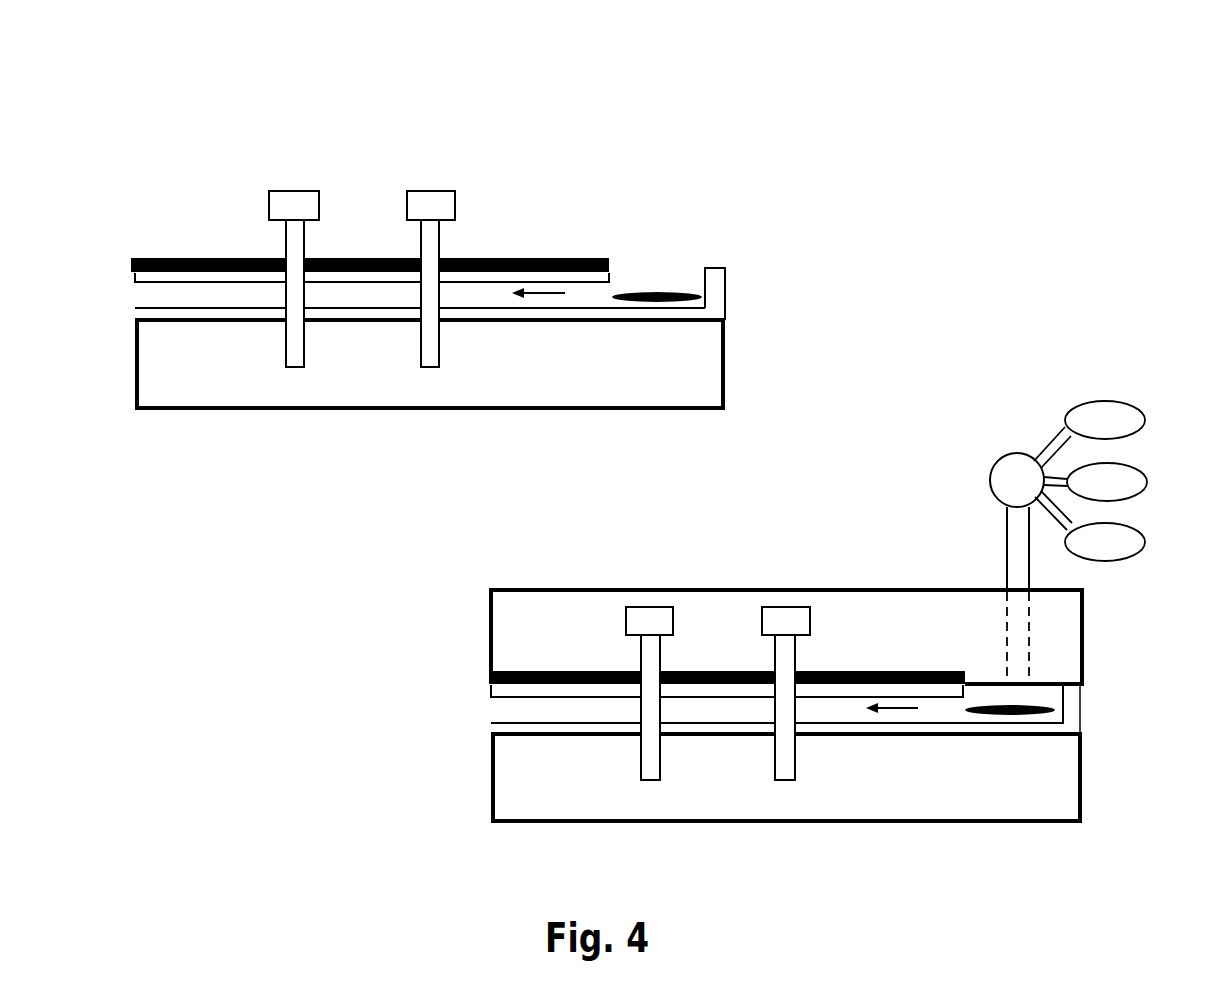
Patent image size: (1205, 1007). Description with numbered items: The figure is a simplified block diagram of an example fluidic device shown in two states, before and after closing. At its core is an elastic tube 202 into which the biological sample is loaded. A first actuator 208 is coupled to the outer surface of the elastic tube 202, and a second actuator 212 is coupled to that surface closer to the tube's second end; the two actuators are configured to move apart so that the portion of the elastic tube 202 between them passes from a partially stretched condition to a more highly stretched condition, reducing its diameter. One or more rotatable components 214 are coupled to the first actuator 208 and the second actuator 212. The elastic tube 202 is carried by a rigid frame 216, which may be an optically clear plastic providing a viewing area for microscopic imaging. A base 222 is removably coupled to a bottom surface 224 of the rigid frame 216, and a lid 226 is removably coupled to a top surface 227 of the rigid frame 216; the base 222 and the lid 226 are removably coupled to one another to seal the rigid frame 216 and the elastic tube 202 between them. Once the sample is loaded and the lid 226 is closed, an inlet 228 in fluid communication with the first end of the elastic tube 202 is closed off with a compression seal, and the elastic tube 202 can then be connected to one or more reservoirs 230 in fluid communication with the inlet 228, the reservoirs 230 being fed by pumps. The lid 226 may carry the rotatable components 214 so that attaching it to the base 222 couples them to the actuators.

The elastic tube 202 is at (389, 281).
The first actuator 208 is at (440, 350).
The second actuator 212 is at (287, 352).
The rotatable components 214 is at (293, 191).
The rigid frame 216 is at (235, 257).
The base 222 is at (727, 358).
The bottom surface 224 is at (734, 305).
The lid 226 is at (491, 637).
The top surface 227 is at (1097, 689).
The inlet 228 is at (668, 262).
The reservoirs 230 is at (1016, 425).